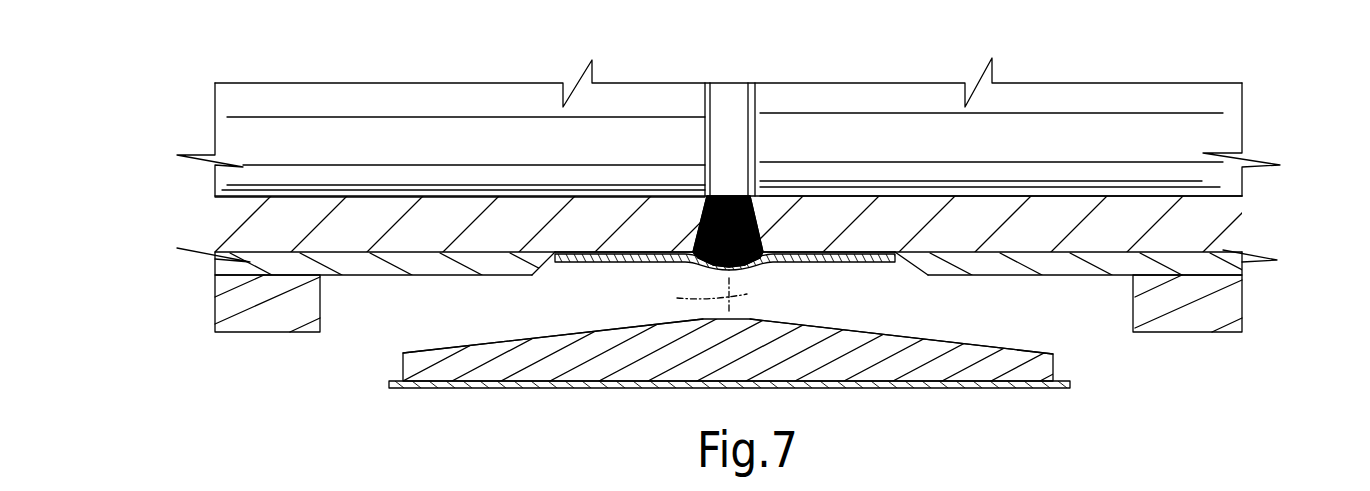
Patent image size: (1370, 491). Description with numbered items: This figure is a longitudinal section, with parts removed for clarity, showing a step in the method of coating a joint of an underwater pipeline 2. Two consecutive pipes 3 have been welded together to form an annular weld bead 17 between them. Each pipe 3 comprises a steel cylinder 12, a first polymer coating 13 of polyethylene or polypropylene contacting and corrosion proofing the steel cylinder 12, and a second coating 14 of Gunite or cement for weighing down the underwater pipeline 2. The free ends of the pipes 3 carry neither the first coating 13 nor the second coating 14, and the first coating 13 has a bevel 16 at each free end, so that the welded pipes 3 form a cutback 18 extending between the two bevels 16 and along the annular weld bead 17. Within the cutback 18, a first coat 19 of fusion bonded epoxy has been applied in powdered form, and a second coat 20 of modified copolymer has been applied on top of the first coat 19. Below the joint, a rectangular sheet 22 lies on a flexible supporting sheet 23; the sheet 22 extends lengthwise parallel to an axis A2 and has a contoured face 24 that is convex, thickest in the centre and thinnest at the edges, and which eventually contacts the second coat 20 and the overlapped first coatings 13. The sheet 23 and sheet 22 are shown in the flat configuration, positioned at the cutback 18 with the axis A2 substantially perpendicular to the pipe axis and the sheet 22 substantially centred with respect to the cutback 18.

The underwater pipeline 2 is at (315, 368).
The pipe 3 is at (402, 308).
The steel cylinder 12 is at (227, 228).
The first polymer coating 13 is at (222, 266).
The second coating 14 is at (232, 320).
The bevel 16 is at (543, 273).
The annular weld bead 17 is at (703, 196).
The cutback 18 is at (530, 318).
The first coat 19 is at (812, 264).
The second coat 20 is at (626, 263).
The sheet 22 is at (991, 327).
The flexible supporting sheet 23 is at (924, 394).
The contoured face 24 is at (868, 330).
The axis A2 is at (698, 295).